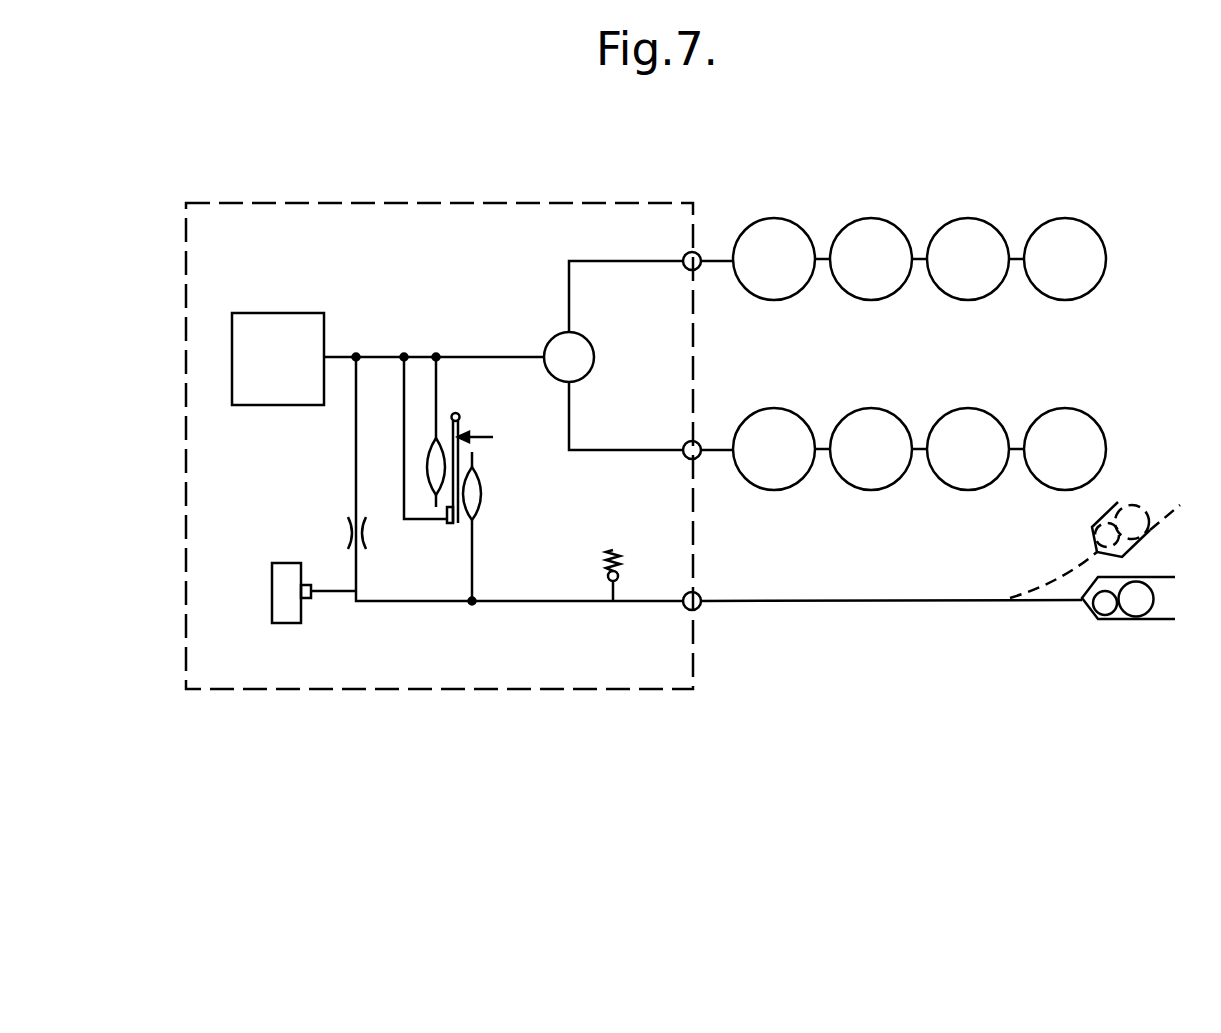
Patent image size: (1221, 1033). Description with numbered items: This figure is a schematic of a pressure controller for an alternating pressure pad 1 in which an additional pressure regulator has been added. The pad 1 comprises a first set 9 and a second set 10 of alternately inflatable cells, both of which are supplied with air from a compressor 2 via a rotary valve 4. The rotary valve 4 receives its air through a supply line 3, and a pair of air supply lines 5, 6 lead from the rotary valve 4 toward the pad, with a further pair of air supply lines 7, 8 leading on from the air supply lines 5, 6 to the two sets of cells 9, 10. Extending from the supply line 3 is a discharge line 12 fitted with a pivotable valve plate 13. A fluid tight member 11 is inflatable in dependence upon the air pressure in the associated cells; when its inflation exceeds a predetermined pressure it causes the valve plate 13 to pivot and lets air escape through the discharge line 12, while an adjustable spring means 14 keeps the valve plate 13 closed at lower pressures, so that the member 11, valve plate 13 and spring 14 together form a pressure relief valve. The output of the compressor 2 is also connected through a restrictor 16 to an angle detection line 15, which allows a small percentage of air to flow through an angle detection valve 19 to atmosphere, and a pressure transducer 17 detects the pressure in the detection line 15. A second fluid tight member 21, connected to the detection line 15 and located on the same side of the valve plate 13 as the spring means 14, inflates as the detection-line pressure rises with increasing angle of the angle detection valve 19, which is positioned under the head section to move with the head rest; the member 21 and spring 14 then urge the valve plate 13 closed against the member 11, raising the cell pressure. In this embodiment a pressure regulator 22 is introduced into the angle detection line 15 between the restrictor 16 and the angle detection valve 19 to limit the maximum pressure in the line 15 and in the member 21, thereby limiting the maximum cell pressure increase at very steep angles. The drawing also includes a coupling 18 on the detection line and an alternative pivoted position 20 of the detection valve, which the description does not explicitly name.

The alternating pressure pad 1 is at (655, 668).
The compressor 2 is at (272, 330).
The supply line 3 is at (546, 352).
The rotary valve 4 is at (583, 356).
The air supply line 5 is at (640, 261).
The air supply line 6 is at (607, 450).
The further air supply line 7 is at (710, 259).
The further air supply line 8 is at (708, 460).
The first set of alternately inflatable cells 9 is at (755, 210).
The second set of alternately inflatable cells 10 is at (755, 397).
The fluid tight member 11 is at (436, 380).
The discharge line 12 is at (404, 467).
The pivotable valve plate 13 is at (452, 523).
The adjustable spring means 14 is at (492, 437).
The angle detection line 15 is at (385, 605).
The restrictor 16 is at (345, 533).
The pressure transducer 17 is at (272, 596).
The third coupling 18 is at (702, 596).
The angle detection valve 19 is at (1160, 609).
The pivoted coupling position 20 is at (1118, 502).
The fluid tight member 21 is at (474, 560).
The pressure regulator 22 is at (618, 574).